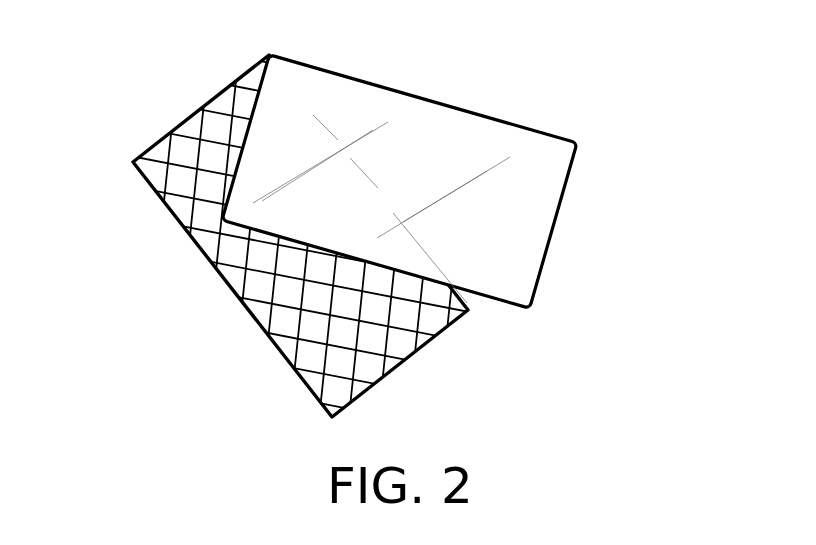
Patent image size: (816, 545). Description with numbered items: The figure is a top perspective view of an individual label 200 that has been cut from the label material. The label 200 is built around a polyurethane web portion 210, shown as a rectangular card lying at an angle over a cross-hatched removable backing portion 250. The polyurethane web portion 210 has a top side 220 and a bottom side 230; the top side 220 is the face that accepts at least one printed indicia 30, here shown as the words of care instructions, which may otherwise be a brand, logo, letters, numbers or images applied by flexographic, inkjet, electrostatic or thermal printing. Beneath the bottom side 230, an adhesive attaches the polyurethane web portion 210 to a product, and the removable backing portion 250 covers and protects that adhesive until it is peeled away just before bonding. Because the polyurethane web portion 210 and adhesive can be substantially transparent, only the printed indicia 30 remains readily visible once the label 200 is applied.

The label 200 is at (148, 248).
The removable backing portion 250 is at (278, 382).
The polyurethane web portion 210 is at (584, 197).
The top side 220 is at (280, 104).
The bottom side 230 is at (496, 322).
The printed indicia 30 is at (428, 164).